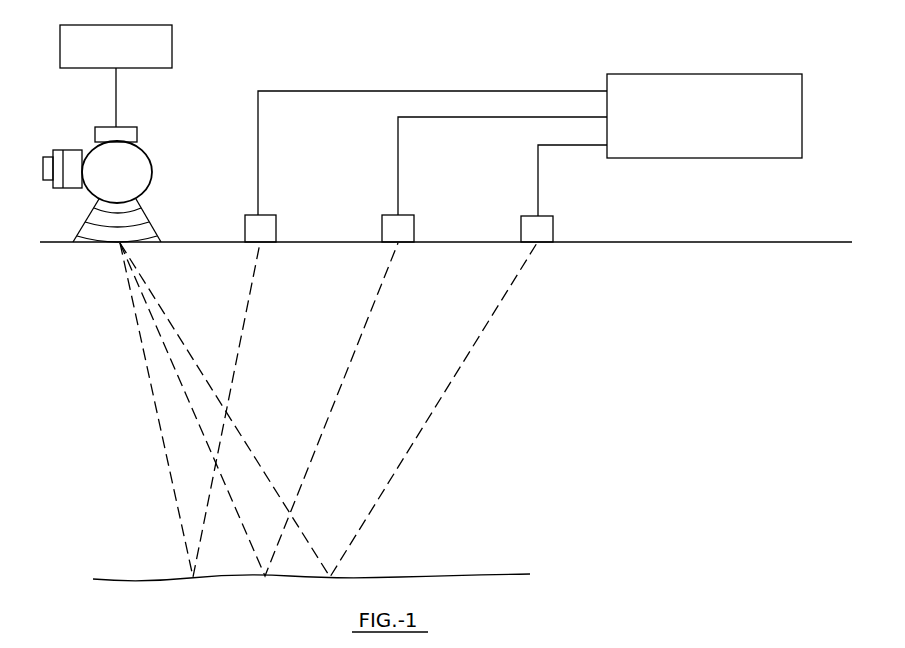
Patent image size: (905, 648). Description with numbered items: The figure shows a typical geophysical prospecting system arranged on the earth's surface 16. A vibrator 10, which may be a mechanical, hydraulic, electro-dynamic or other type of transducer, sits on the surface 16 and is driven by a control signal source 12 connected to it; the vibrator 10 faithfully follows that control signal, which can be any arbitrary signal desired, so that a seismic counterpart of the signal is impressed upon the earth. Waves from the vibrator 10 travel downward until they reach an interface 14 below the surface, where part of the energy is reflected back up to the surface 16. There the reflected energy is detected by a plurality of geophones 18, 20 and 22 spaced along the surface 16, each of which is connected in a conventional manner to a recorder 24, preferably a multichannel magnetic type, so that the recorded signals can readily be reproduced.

The vibrator 10 is at (150, 158).
The control signal source 12 is at (172, 43).
The interface 14 is at (487, 573).
The surface 16 is at (650, 242).
The geophone 18 is at (276, 228).
The geophone 20 is at (414, 228).
The geophone 22 is at (553, 228).
The recorder 24 is at (680, 74).